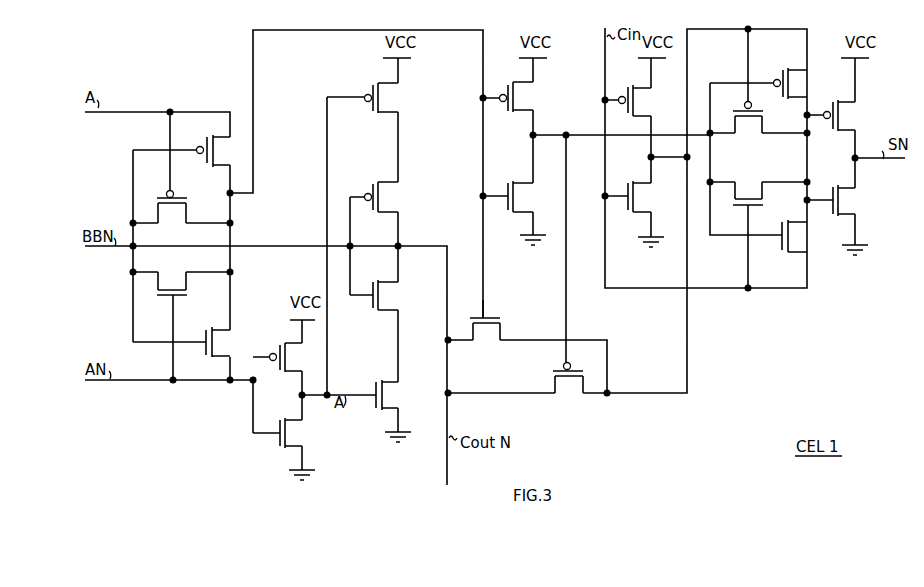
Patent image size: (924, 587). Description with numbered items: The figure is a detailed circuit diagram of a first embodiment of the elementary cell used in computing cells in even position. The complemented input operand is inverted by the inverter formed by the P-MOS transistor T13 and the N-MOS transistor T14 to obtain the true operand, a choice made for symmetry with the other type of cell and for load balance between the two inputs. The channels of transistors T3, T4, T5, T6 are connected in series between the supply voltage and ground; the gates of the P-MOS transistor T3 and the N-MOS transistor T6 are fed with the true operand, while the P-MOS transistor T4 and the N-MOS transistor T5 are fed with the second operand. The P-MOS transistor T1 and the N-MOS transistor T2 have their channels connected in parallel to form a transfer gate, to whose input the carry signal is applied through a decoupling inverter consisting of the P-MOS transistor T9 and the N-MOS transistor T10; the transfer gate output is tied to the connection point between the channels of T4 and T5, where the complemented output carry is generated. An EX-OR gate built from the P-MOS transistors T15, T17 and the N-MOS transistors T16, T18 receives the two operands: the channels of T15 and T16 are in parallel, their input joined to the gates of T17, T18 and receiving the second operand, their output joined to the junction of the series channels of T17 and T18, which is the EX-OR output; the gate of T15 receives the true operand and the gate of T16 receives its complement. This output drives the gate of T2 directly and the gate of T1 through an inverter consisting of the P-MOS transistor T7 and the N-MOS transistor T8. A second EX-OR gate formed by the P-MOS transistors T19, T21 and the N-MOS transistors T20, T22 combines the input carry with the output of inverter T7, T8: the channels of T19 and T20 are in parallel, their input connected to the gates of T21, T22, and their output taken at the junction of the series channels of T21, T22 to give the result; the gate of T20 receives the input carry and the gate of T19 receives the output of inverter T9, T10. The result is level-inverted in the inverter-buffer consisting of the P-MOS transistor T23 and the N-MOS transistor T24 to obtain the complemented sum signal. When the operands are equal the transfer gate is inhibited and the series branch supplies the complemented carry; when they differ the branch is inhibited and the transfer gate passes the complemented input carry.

The P-MOS transistor T1 is at (553, 383).
The N-MOS transistor T2 is at (502, 328).
The P-MOS transistor T3 is at (380, 100).
The P-MOS transistor T4 is at (380, 199).
The N-MOS transistor T5 is at (380, 297).
The N-MOS transistor T6 is at (383, 397).
The P-MOS transistor T7 is at (515, 100).
The N-MOS transistor T8 is at (515, 199).
The P-MOS transistor T9 is at (636, 102).
The N-MOS transistor T10 is at (636, 199).
The P-MOS transistor T13 is at (288, 360).
The N-MOS transistor T14 is at (288, 435).
The P-MOS transistor T15 is at (187, 206).
The N-MOS transistor T16 is at (187, 283).
The P-MOS transistor T17 is at (213, 155).
The N-MOS transistor T18 is at (213, 346).
The P-MOS transistor T19 is at (764, 118).
The N-MOS transistor T20 is at (764, 199).
The P-MOS transistor T21 is at (791, 87).
The N-MOS transistor T22 is at (791, 237).
The P-MOS transistor T23 is at (841, 118).
The N-MOS transistor T24 is at (841, 202).